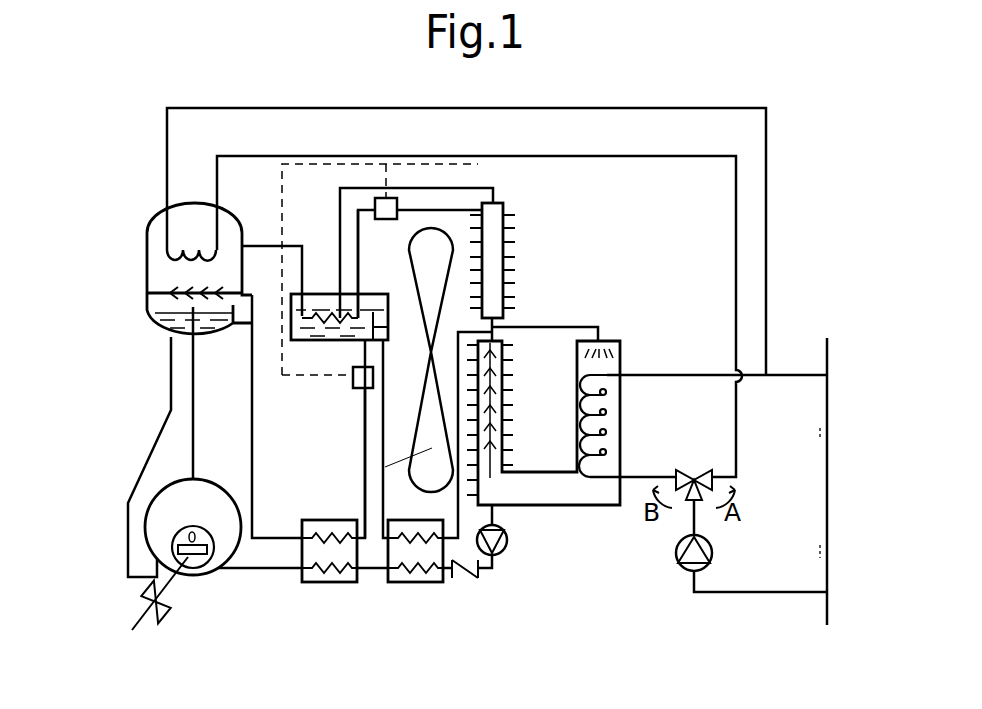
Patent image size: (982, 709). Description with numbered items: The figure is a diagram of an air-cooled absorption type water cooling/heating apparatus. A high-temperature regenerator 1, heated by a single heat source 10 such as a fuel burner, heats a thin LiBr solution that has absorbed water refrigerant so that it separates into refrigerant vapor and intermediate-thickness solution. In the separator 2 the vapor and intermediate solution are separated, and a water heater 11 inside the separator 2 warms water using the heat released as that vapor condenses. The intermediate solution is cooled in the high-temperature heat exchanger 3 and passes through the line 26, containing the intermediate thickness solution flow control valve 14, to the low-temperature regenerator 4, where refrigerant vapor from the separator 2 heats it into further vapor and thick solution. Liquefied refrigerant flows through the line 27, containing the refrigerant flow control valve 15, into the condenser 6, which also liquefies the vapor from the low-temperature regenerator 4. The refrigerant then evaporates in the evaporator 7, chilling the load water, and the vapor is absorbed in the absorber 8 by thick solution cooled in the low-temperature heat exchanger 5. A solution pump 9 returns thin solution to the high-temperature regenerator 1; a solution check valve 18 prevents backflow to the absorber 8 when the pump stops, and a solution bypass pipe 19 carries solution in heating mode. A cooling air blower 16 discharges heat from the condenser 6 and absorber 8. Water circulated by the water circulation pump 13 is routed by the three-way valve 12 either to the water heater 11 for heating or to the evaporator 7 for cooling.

The high-temperature regenerator 1 is at (208, 572).
The separator 2 is at (147, 240).
The high-temperature heat exchanger 3 is at (333, 583).
The low-temperature regenerator 4 is at (322, 293).
The low-temperature heat exchanger 5 is at (405, 583).
The condenser 6 is at (496, 208).
The evaporator 7 is at (608, 338).
The absorber 8 is at (498, 345).
The solution pump 9 is at (505, 548).
The heat source 10 is at (166, 592).
The water heater 11 is at (186, 240).
The three-way valve 12 is at (690, 470).
The water circulation pump 13 is at (685, 573).
The intermediate thickness solution flow control valve 14 is at (354, 388).
The refrigerant flow control valve 15 is at (383, 222).
The cooling air blower 16 is at (430, 352).
The solution check valve 18 is at (473, 574).
The solution bypass pipe 19 is at (128, 510).
The line 26 is at (365, 460).
The line 27 is at (357, 222).